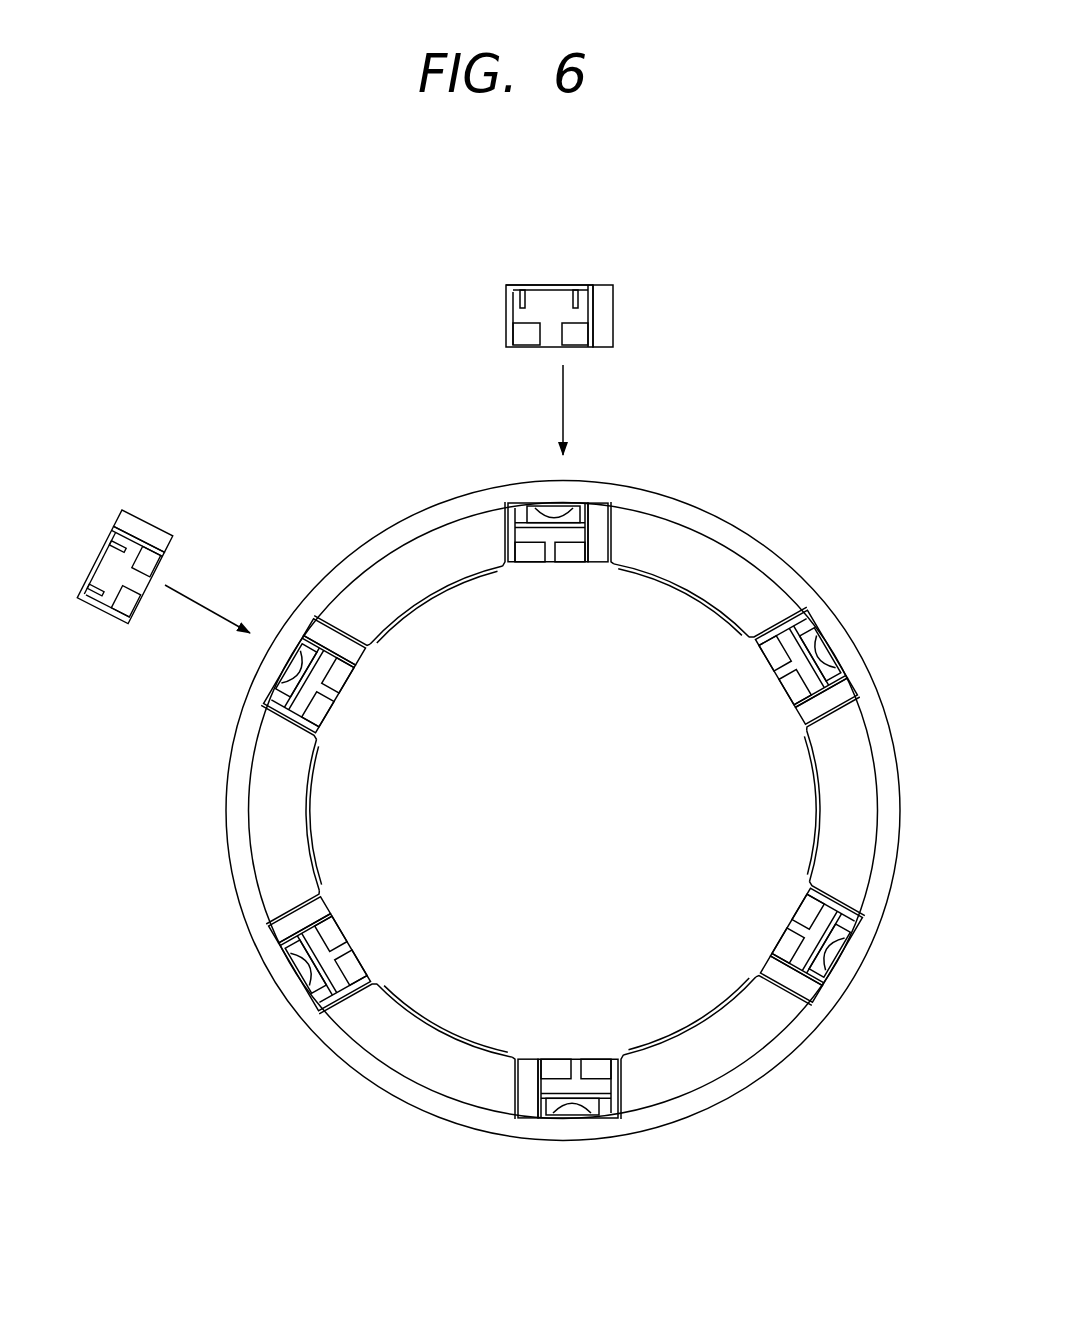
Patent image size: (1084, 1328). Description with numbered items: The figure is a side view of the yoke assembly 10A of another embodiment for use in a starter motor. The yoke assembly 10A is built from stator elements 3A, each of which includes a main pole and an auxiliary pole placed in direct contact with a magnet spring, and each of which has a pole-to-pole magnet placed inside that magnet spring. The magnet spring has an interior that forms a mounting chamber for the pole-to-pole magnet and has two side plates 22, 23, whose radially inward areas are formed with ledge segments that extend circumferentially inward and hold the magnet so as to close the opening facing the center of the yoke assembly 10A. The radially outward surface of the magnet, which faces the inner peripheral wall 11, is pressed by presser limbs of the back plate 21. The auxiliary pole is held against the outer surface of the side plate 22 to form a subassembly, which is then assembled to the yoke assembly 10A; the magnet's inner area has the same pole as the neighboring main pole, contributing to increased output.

The stator element 3A is at (415, 995).
The yoke assembly 10A is at (551, 815).
The inner peripheral wall 11 is at (665, 1096).
The back plate 21 is at (558, 284).
The side plate 22 is at (602, 317).
The side plate 23 is at (505, 313).